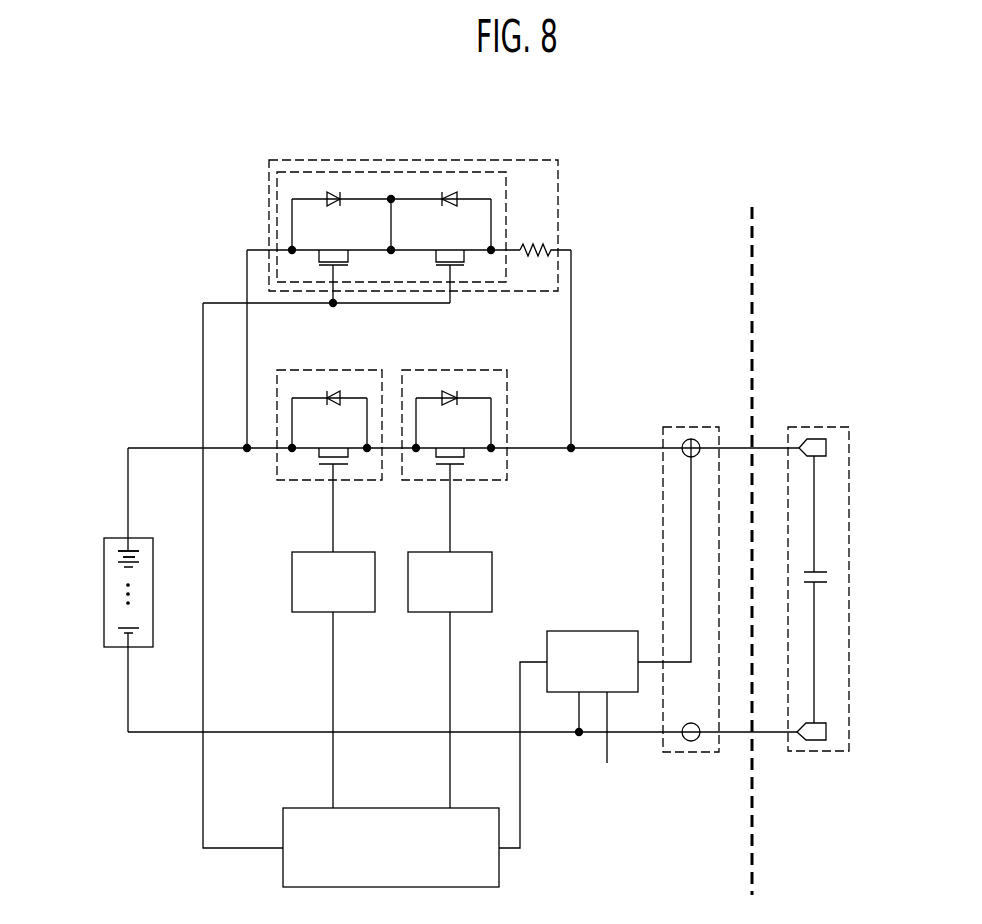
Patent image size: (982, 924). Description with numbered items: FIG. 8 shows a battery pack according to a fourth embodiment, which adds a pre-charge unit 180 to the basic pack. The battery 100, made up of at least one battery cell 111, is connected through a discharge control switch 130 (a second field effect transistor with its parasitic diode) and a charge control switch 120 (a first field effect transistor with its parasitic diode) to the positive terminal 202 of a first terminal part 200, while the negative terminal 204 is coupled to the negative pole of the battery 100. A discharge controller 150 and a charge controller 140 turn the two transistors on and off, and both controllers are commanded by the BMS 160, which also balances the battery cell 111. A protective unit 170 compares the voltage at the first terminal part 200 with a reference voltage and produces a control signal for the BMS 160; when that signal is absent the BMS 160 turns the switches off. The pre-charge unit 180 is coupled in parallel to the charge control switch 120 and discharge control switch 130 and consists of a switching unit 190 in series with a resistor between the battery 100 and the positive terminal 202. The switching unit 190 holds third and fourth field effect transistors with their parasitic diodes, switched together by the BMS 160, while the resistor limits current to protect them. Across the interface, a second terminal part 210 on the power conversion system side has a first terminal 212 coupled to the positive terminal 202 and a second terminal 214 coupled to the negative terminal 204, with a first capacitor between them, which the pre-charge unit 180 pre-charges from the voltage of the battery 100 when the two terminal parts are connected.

The battery 100 is at (104, 591).
The battery cell 111 is at (123, 551).
The charge control switch 120 is at (467, 370).
The discharge control switch 130 is at (343, 370).
The charge controller 140 is at (478, 552).
The discharge controller 150 is at (358, 552).
The battery management system (BMS) 160 is at (390, 808).
The protective unit 170 is at (603, 631).
The pre-charge unit 180 is at (476, 160).
The switching unit 190 is at (392, 172).
The first terminal part 200 is at (699, 588).
The positive terminal 202 is at (689, 439).
The negative terminal 204 is at (690, 741).
The second terminal part 210 is at (835, 587).
The first terminal 212 is at (811, 439).
The second terminal 214 is at (814, 741).